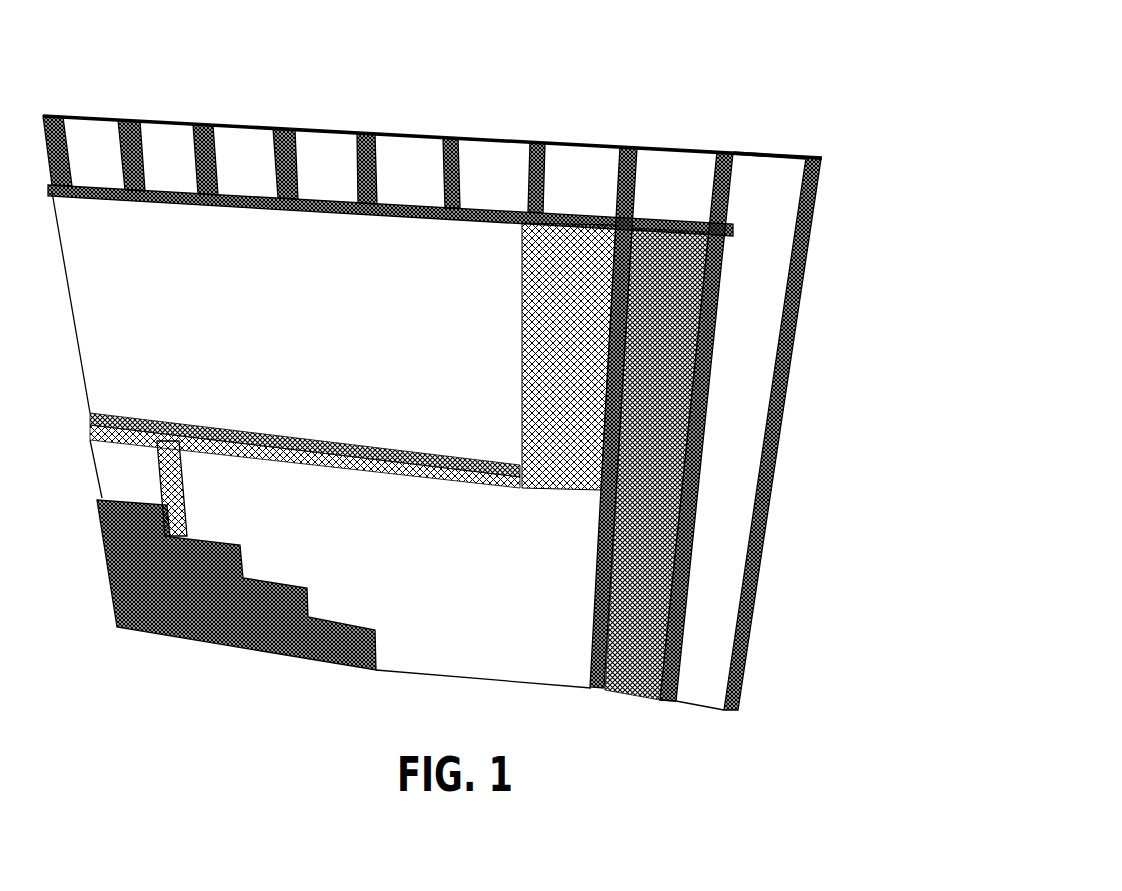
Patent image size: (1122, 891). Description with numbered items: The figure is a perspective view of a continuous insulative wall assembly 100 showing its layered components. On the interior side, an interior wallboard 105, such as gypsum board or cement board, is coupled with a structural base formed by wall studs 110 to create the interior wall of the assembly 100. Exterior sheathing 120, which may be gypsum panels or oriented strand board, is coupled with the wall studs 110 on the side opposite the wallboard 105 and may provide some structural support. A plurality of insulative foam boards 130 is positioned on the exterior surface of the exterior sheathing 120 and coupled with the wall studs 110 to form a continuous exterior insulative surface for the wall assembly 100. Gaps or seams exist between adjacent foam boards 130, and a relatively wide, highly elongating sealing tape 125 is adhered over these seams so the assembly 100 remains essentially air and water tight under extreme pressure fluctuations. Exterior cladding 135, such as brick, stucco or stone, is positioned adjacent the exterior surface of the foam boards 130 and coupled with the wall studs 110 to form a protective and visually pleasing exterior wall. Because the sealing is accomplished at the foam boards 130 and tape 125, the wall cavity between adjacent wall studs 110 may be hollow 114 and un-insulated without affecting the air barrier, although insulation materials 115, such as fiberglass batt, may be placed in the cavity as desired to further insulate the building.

The continuous insulative wall assembly 100 is at (806, 138).
The interior wallboard 105 is at (757, 182).
The wall studs 110 is at (807, 239).
The insulation materials 115 is at (680, 313).
The exterior sheathing 120 is at (585, 398).
The sealing tape 125 is at (518, 475).
The insulative foam boards 130 is at (540, 535).
The hollow wall cavity 114 is at (710, 595).
The exterior cladding 135 is at (367, 643).